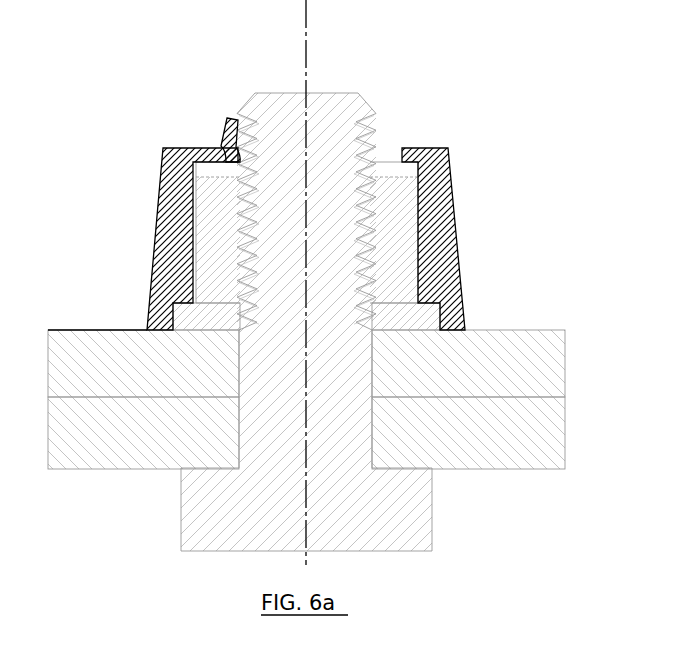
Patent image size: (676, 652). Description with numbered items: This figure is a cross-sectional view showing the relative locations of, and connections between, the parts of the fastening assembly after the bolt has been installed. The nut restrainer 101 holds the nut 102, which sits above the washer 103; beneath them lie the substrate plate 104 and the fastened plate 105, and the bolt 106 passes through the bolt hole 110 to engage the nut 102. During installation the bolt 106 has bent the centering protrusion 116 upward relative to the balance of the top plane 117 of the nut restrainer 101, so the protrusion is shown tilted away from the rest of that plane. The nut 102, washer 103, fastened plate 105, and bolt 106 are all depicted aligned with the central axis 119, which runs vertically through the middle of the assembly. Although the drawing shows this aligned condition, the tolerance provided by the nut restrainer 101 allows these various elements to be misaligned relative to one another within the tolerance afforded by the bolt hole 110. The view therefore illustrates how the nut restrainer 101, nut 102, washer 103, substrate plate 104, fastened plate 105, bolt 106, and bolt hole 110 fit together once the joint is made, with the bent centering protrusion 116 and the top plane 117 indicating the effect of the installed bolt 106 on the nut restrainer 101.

The nut restrainer 101 is at (161, 183).
The nut 102 is at (428, 199).
The washer 103 is at (447, 303).
The substrate plate 104 is at (129, 329).
The fastened plate 105 is at (447, 471).
The bolt 106 is at (381, 118).
The bolt hole 110 is at (232, 365).
The centering protrusion 116 is at (226, 117).
The top plane 117 is at (203, 146).
The central axis 119 is at (311, 76).